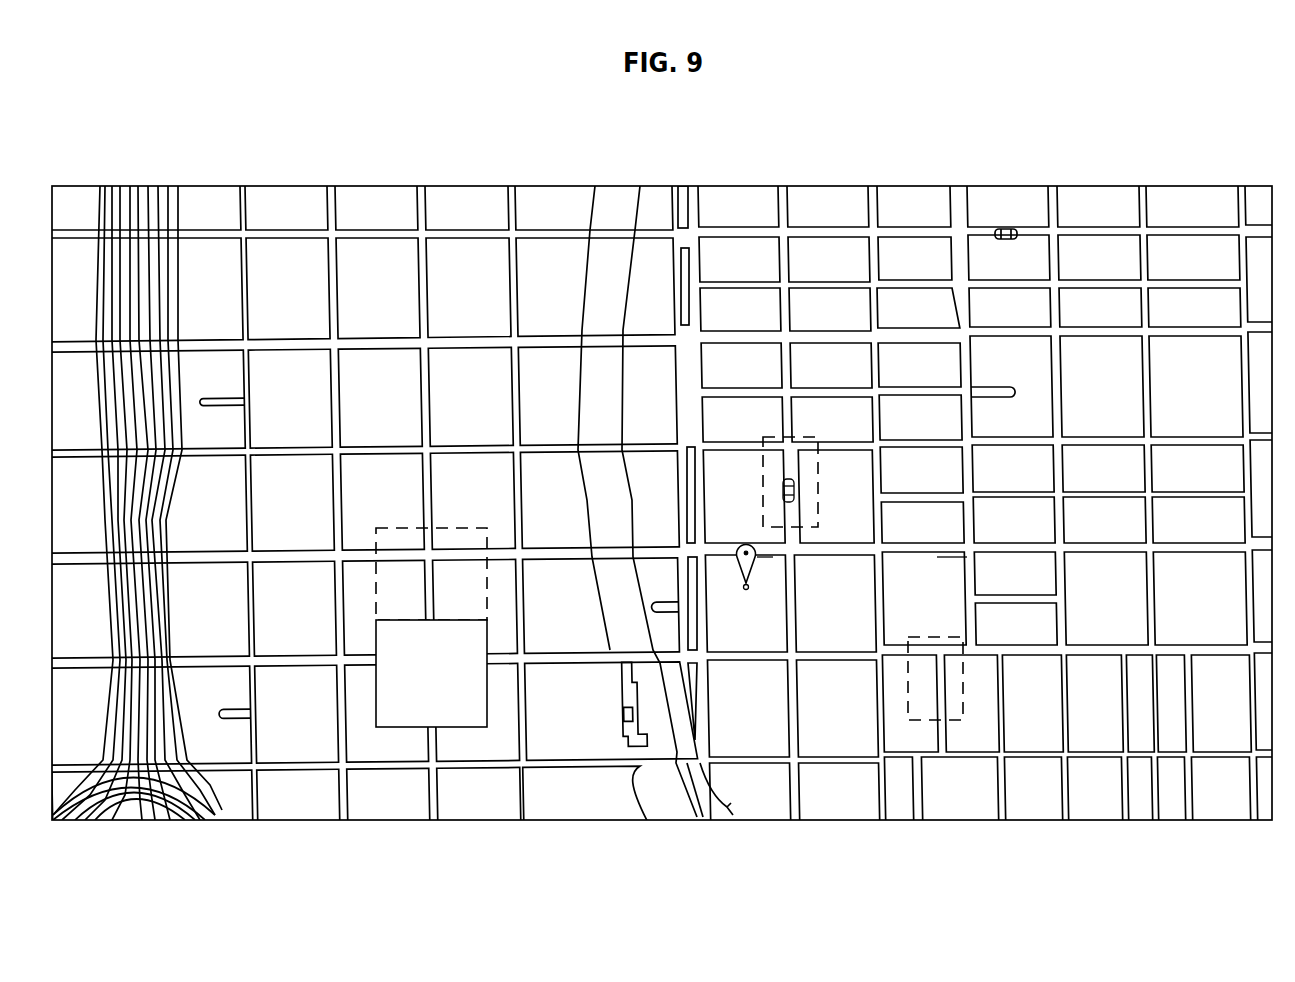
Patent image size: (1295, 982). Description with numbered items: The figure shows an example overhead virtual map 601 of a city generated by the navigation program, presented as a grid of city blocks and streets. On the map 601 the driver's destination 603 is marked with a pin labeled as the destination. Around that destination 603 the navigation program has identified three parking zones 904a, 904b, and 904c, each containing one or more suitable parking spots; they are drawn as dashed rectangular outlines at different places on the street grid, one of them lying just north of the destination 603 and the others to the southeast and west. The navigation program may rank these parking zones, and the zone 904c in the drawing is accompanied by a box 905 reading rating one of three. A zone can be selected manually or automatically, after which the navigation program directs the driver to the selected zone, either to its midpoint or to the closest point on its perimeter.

The map 601 is at (847, 167).
The destination 603 is at (746, 591).
The parking zone 904a is at (768, 436).
The parking zone 904b is at (963, 708).
The parking zone 904c is at (376, 556).
The rating indicator 905 is at (375, 636).